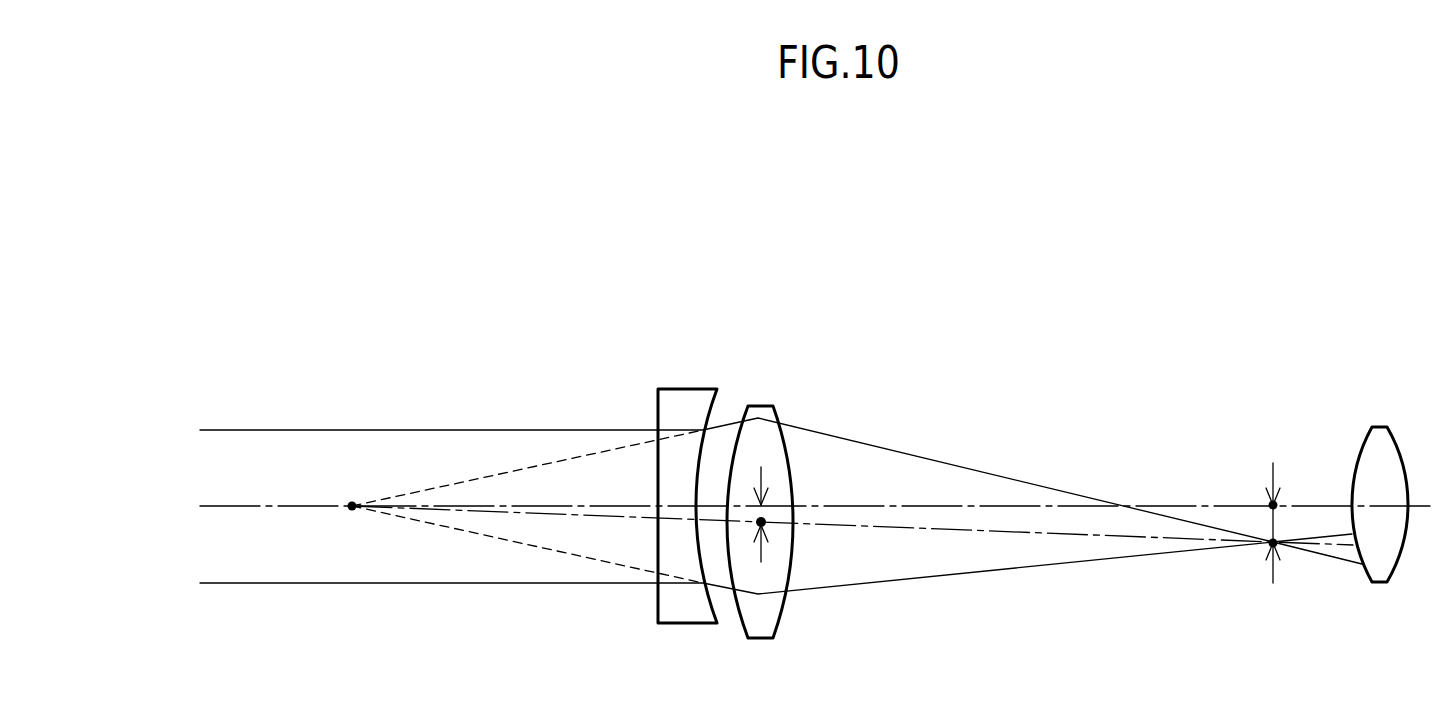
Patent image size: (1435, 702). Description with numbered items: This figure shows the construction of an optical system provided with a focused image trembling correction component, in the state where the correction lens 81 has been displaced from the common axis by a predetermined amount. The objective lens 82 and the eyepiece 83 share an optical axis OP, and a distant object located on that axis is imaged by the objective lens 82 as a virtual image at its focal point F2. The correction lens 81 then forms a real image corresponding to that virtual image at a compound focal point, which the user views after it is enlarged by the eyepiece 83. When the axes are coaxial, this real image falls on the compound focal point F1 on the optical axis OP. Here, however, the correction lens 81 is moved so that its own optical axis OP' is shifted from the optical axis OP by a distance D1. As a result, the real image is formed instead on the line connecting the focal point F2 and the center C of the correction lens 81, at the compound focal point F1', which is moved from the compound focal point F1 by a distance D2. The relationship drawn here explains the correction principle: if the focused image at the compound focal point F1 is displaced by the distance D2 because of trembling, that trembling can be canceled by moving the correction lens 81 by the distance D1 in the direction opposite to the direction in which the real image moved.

The correction lens 81 is at (761, 406).
The objective lens 82 is at (688, 389).
The eyepiece 83 is at (1380, 427).
The optical axis OP is at (817, 442).
The optical axis of correction lens OP' is at (852, 480).
The compound focal point F1 is at (1235, 482).
The moved compound focal point F1' is at (1336, 589).
The focal point F2 is at (352, 511).
The distance D1 is at (763, 511).
The distance D2 is at (1276, 522).
The center of correction lens C is at (765, 526).